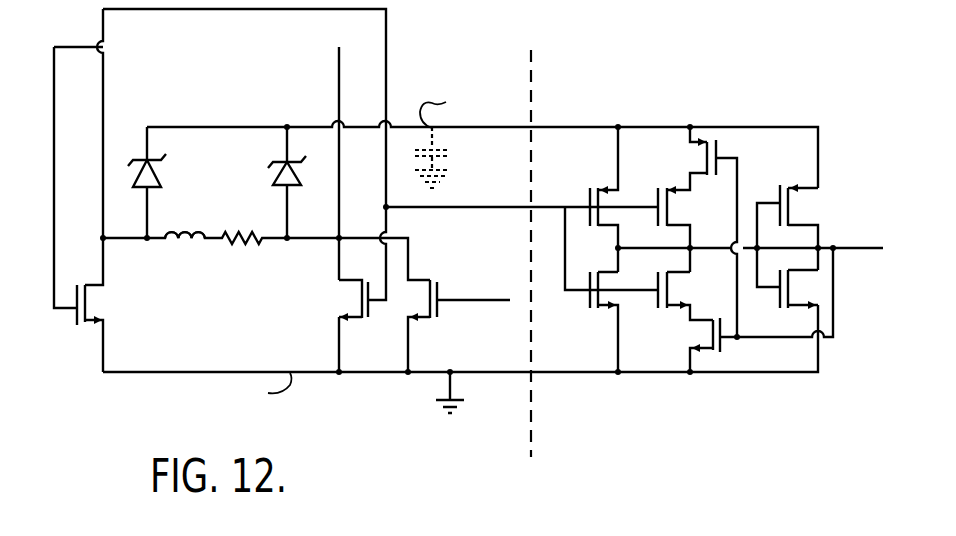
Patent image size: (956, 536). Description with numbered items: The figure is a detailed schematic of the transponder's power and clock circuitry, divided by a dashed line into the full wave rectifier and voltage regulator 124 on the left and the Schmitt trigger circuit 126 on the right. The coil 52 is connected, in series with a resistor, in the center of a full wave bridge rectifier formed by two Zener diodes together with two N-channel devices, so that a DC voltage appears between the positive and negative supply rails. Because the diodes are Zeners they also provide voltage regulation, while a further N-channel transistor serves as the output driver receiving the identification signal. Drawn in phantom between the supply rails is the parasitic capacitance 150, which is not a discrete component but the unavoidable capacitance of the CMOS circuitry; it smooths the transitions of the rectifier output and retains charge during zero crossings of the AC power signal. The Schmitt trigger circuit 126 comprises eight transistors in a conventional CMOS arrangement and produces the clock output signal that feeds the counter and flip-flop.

The coil 52 is at (193, 234).
The parasitic capacitance 150 is at (440, 181).
The full wave rectifier and voltage regulator 124 is at (526, 437).
The Schmitt trigger circuit 126 is at (542, 440).